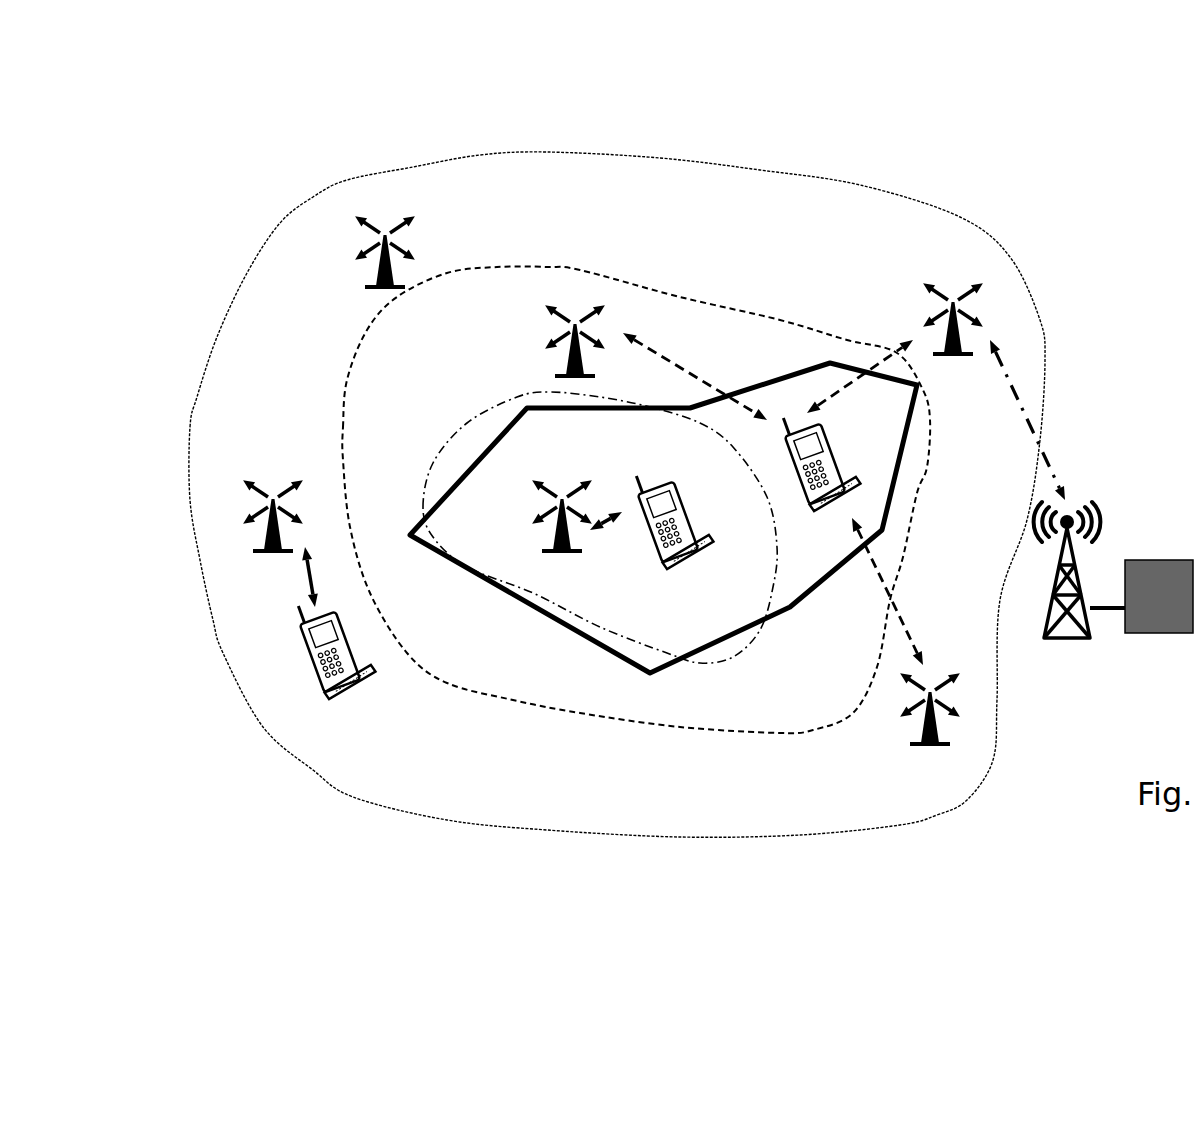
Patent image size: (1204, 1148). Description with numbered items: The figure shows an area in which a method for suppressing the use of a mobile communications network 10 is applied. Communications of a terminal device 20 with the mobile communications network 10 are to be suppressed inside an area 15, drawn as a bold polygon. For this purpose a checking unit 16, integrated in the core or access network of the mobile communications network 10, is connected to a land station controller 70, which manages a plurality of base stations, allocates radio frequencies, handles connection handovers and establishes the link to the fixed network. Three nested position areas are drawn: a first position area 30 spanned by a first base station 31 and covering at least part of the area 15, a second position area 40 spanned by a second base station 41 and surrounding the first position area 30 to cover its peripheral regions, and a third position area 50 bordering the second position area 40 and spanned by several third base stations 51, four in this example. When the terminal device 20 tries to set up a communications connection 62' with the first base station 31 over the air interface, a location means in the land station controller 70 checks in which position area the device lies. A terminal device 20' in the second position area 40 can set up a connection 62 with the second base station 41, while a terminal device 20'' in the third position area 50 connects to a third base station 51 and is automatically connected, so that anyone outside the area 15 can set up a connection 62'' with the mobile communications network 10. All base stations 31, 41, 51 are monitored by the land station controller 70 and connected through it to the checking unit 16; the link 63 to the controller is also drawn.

The mobile communications network 10 is at (1018, 182).
The area 15 is at (482, 578).
The checking unit 16 is at (1137, 563).
The terminal device 20 is at (674, 541).
The terminal device 20' is at (845, 456).
The terminal device 20'' is at (367, 674).
The first position area 30 is at (533, 450).
The first base station 31 is at (572, 550).
The second position area 40 is at (442, 342).
The second base station 41 is at (570, 328).
The third position area 50 is at (297, 313).
The third base station 51 is at (257, 510).
The connection 62 is at (773, 499).
The communications connection 62' is at (601, 479).
The connection 62'' is at (240, 600).
The backhaul link 63 is at (1040, 447).
The land station controller 70 is at (1067, 640).